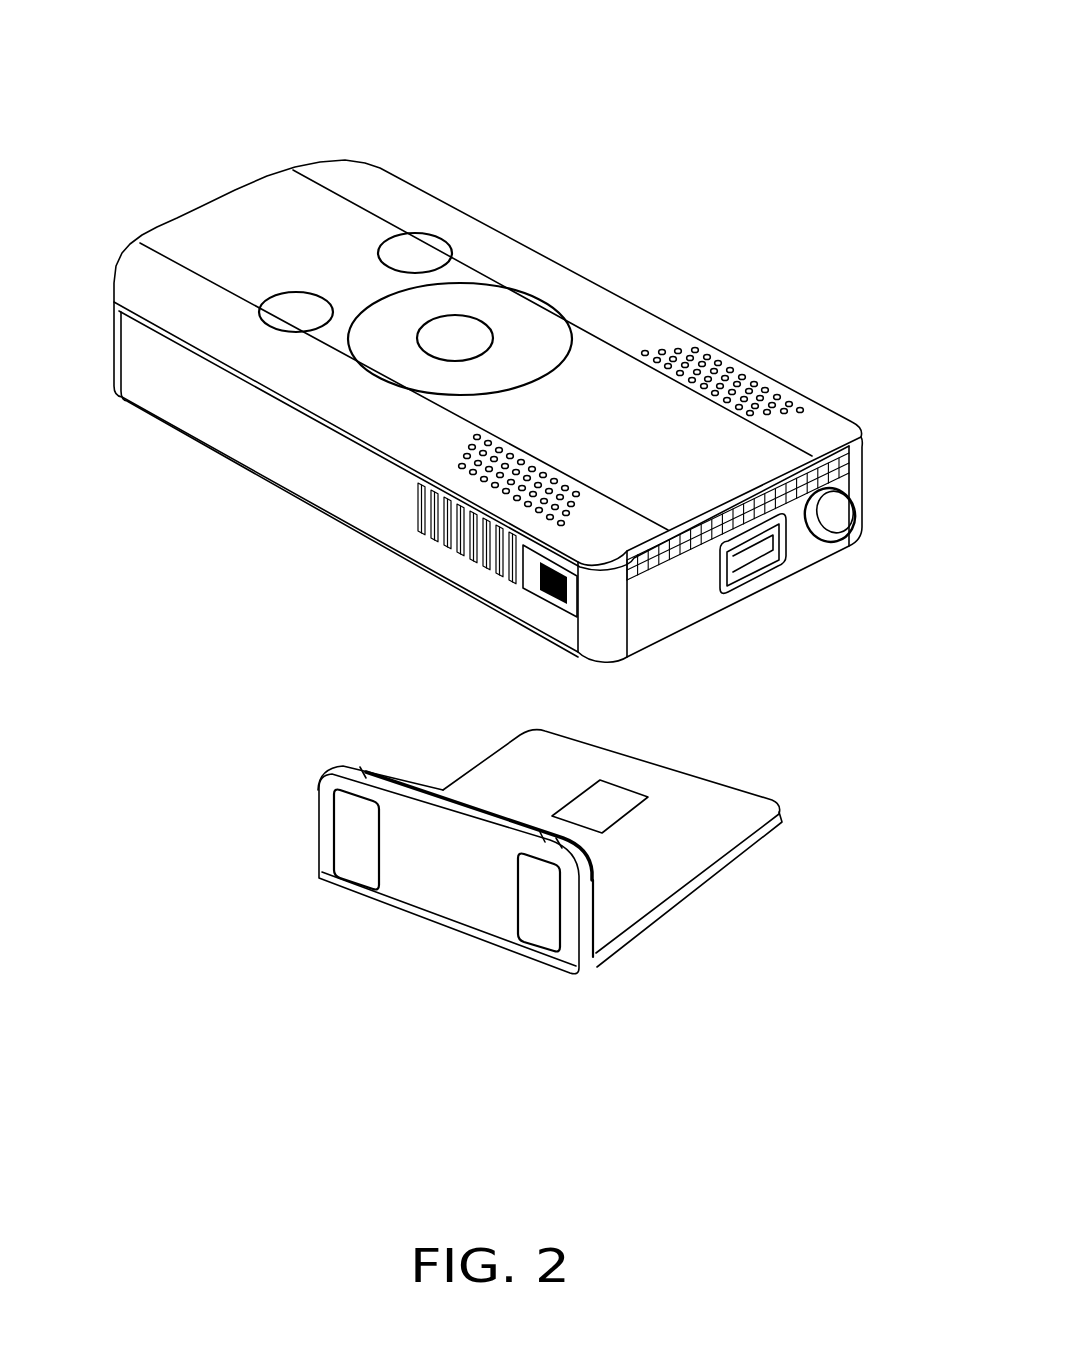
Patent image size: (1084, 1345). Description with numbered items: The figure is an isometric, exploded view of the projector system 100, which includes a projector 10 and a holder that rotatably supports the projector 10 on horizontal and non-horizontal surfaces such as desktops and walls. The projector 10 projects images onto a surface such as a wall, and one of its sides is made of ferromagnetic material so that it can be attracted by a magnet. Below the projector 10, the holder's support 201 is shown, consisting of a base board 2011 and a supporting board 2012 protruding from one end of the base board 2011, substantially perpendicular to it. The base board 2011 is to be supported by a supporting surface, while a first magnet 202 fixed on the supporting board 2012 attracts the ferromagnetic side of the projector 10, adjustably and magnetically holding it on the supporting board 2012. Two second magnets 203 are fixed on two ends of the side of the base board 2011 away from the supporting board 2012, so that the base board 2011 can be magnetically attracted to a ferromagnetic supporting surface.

The projector system 100 is at (497, 42).
The projector 10 is at (630, 322).
The support 201 is at (730, 1060).
The base board 2011 is at (573, 950).
The supporting board 2012 is at (630, 913).
The first magnet 202 is at (613, 800).
The second magnets 203 is at (357, 842).